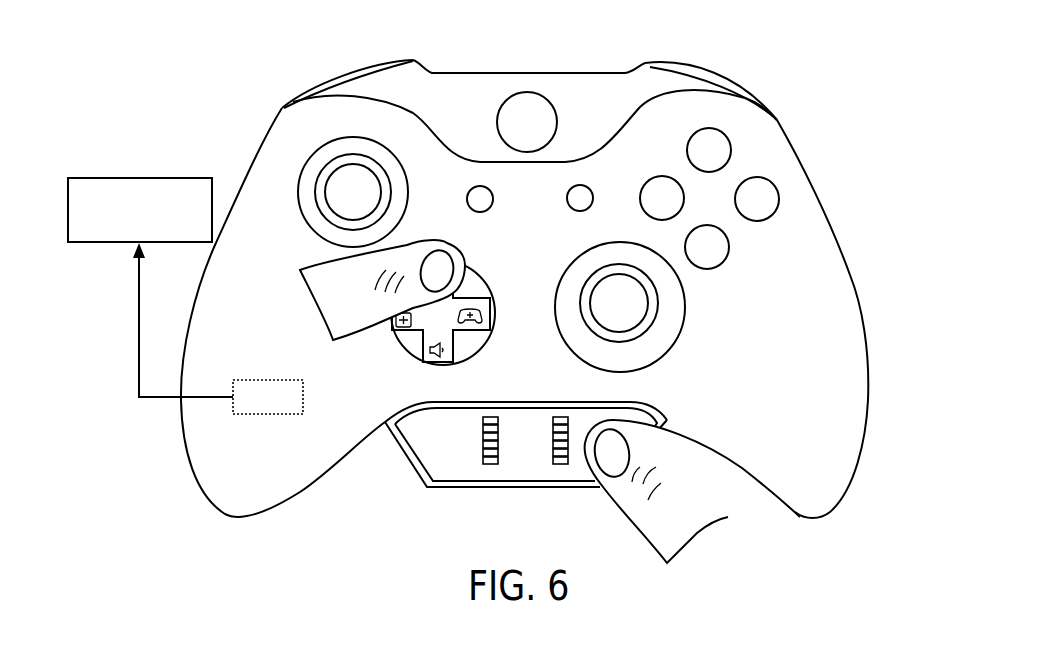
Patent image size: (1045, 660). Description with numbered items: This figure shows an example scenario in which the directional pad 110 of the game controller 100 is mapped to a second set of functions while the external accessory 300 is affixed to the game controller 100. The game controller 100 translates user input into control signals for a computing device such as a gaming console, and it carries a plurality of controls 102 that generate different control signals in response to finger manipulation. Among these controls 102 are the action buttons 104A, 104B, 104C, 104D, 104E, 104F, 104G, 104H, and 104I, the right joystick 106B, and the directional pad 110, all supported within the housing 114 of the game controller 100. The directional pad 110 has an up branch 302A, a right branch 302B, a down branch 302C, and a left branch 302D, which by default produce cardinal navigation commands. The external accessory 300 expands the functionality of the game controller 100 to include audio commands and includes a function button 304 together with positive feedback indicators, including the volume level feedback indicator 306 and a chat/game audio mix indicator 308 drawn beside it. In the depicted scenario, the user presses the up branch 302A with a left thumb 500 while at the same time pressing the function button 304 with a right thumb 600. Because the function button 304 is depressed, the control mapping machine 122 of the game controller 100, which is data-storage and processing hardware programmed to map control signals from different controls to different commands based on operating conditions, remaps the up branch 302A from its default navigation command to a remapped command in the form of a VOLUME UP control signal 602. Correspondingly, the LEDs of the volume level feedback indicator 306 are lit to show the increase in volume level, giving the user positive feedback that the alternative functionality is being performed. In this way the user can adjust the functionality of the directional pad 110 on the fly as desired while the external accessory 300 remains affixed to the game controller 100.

The game controller 100 is at (238, 72).
The plurality of controls 102 is at (815, 115).
The action button 104A is at (378, 57).
The action button 104B is at (713, 62).
The action button 104C is at (640, 200).
The action button 104D is at (729, 249).
The action button 104E is at (779, 199).
The action button 104F is at (687, 150).
The action button 104G is at (480, 212).
The action button 104H is at (580, 212).
The action button 104I is at (498, 115).
The right joystick 106B is at (633, 340).
The directional pad 110 is at (508, 319).
The housing 114 is at (257, 152).
The control mapping machine 122 is at (265, 416).
The external accessory 300 is at (410, 532).
The up branch 302A is at (478, 290).
The right branch 302B is at (472, 332).
The down branch 302C is at (434, 364).
The left branch 302D is at (400, 339).
The function button 304 is at (588, 428).
The volume level feedback indicator 306 is at (564, 468).
The mix slider 308 is at (494, 468).
The left thumb 500 is at (323, 318).
The right thumb 600 is at (697, 535).
The VOLUME UP control signal 602 is at (152, 178).